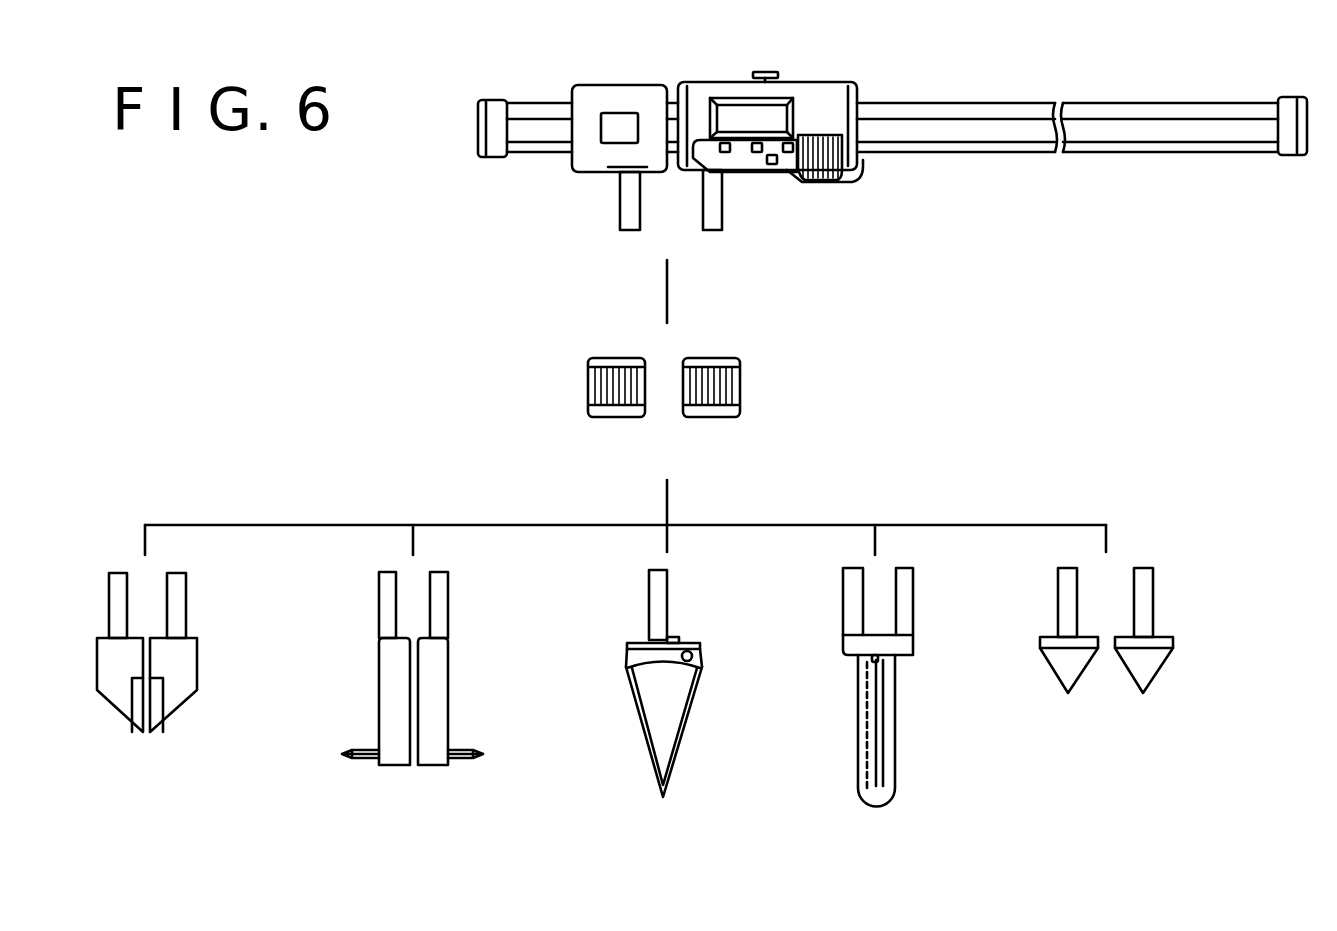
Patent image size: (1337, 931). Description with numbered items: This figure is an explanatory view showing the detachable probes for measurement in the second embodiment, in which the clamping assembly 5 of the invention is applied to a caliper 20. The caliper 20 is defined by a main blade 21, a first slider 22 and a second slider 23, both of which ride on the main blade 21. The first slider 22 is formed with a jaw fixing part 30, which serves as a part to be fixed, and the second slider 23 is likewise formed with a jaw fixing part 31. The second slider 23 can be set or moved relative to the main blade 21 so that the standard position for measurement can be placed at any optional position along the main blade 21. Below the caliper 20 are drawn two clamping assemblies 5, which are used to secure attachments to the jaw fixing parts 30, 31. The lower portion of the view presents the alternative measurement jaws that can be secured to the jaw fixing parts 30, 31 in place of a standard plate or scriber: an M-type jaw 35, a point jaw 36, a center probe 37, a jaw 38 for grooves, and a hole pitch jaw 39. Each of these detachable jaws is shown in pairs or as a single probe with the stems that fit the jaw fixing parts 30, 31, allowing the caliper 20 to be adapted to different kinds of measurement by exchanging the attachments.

The caliper 20 is at (1180, 98).
The main blade 21 is at (966, 108).
The first slider 22 is at (826, 95).
The second slider 23 is at (617, 91).
The jaw fixing part 30 is at (722, 210).
The jaw fixing part 31 is at (620, 210).
The clamping assembly 5 is at (588, 384).
The M-type jaw 35 is at (119, 707).
The point jaw 36 is at (393, 758).
The center probe 37 is at (665, 742).
The jaw for groove 38 is at (874, 789).
The hole pitch jaw 39 is at (1073, 672).